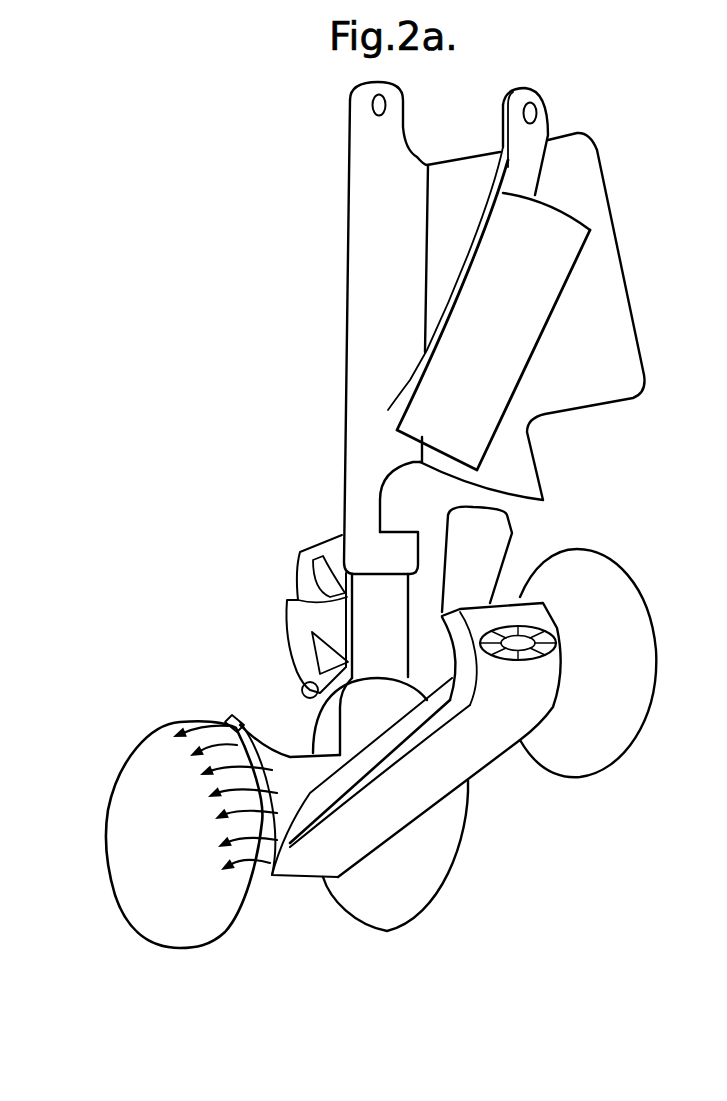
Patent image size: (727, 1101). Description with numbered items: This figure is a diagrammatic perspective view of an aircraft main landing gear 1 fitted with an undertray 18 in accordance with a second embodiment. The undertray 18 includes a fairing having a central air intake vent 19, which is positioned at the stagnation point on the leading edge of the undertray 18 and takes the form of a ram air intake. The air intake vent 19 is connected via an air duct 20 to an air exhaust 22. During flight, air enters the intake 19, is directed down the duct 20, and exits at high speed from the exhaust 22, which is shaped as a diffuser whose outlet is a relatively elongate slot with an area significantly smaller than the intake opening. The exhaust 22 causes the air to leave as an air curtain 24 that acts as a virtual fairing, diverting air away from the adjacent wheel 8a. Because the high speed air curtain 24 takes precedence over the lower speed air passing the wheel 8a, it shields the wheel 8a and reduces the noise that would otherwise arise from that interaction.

The aircraft main landing gear 1 is at (293, 324).
The wheel 8a is at (120, 843).
The undertray 18 is at (483, 760).
The air intake vent 19 is at (535, 627).
The air duct 20 is at (397, 743).
The air exhaust 22 is at (245, 722).
The air curtain 24 is at (237, 860).